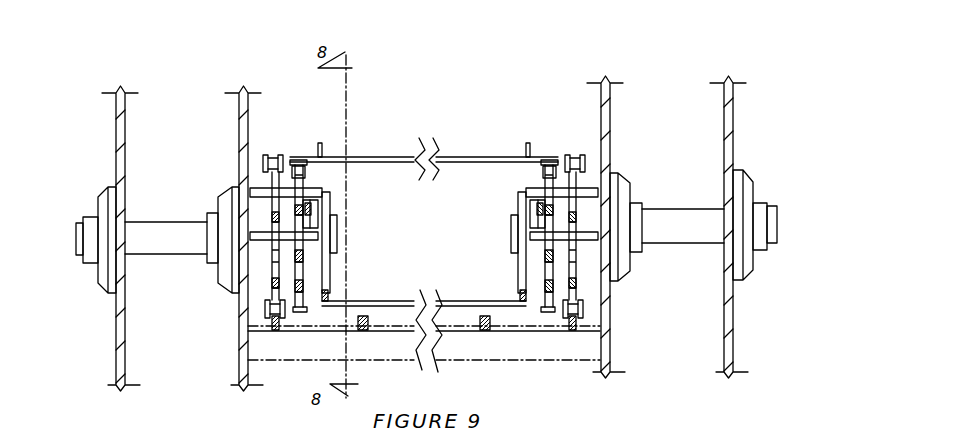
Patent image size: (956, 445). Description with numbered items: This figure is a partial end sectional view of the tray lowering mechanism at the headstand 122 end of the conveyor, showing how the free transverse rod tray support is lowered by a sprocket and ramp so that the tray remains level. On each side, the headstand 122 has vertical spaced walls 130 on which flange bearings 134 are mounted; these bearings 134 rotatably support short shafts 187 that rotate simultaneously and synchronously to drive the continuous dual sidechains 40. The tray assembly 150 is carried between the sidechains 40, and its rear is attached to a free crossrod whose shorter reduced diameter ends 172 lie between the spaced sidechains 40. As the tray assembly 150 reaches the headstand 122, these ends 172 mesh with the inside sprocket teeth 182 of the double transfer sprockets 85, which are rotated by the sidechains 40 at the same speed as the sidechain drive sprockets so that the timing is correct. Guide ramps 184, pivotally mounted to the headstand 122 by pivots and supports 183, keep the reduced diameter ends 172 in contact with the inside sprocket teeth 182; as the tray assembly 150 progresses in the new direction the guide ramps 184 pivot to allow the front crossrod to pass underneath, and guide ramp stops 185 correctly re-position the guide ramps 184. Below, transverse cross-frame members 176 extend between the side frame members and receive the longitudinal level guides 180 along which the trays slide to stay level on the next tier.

The vertical spaced walls 130 is at (117, 128).
The headstand 122 is at (235, 113).
The flange bearings 134 is at (108, 193).
The short shafts 187 is at (187, 257).
The sidechains 40 is at (272, 153).
The reduced diameter ends 172 is at (290, 162).
The inside sprocket teeth 182 is at (305, 177).
The tray assembly 150 is at (374, 156).
The supports 183 is at (322, 191).
The double transfer sprockets 85 is at (332, 206).
The guide ramp stops 185 is at (320, 236).
The guide ramps 184 is at (328, 292).
The level guides 180 is at (282, 325).
The cross-frame members 176 is at (498, 357).